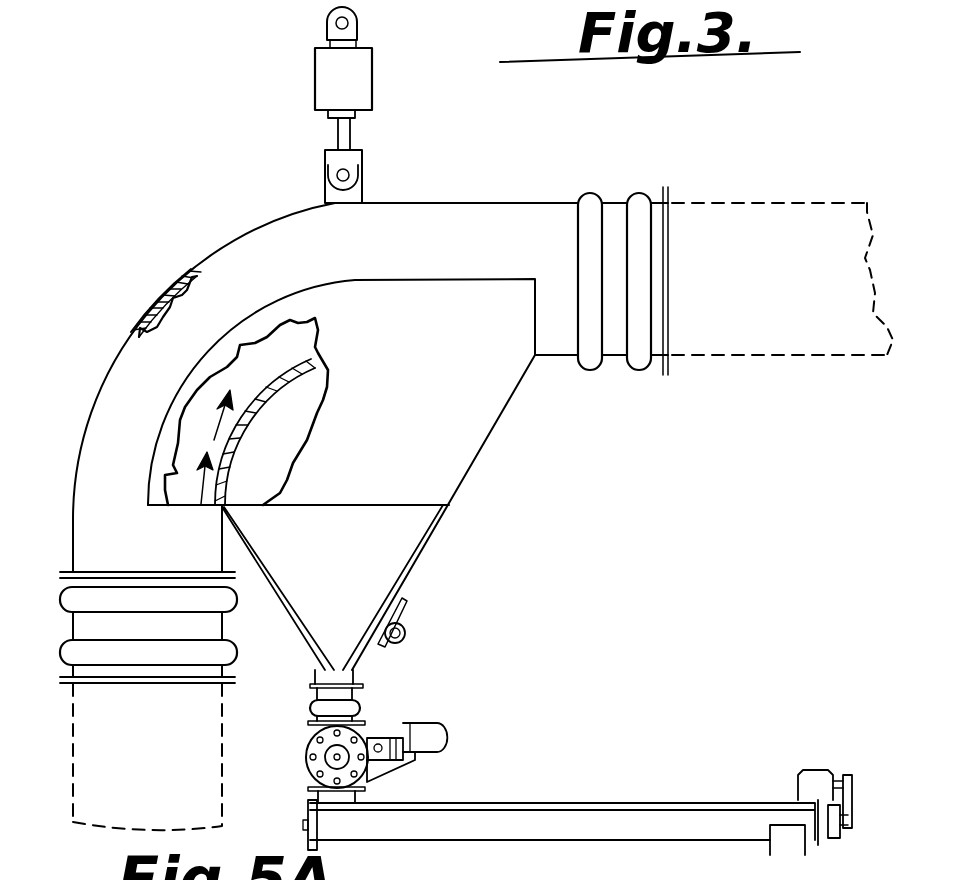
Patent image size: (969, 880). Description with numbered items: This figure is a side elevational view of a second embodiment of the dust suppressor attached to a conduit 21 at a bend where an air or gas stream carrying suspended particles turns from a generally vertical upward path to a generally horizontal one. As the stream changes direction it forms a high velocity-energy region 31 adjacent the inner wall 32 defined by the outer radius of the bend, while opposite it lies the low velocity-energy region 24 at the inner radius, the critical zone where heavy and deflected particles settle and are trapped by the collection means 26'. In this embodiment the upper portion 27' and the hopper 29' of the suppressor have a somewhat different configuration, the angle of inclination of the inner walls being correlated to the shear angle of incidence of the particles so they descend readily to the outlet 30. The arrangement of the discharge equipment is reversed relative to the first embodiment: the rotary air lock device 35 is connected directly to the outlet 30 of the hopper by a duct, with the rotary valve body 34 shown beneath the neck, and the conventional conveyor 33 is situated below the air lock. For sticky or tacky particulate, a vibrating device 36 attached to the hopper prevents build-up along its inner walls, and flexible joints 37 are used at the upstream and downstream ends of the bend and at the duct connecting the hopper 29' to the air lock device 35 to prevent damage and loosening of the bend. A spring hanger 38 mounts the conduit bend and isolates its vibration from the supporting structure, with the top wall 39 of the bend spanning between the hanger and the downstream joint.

The conduit 21 is at (96, 441).
The low velocity-energy region 24 is at (253, 380).
The collection means 26' is at (399, 567).
The upper portion of the dust suppressor 27' is at (462, 512).
The hopper 29' is at (419, 587).
The outlet 30 is at (358, 669).
The high velocity-energy region 31 is at (237, 367).
The inner wall 32 is at (188, 282).
The conveyor 33 is at (537, 843).
The rotary valve 34 is at (310, 718).
The rotary air lock device 35 is at (366, 742).
The vibrating device 36 is at (406, 628).
The flexible joints 37 is at (597, 195).
The spring hanger 38 is at (357, 87).
The top wall of elbow 39 is at (410, 201).